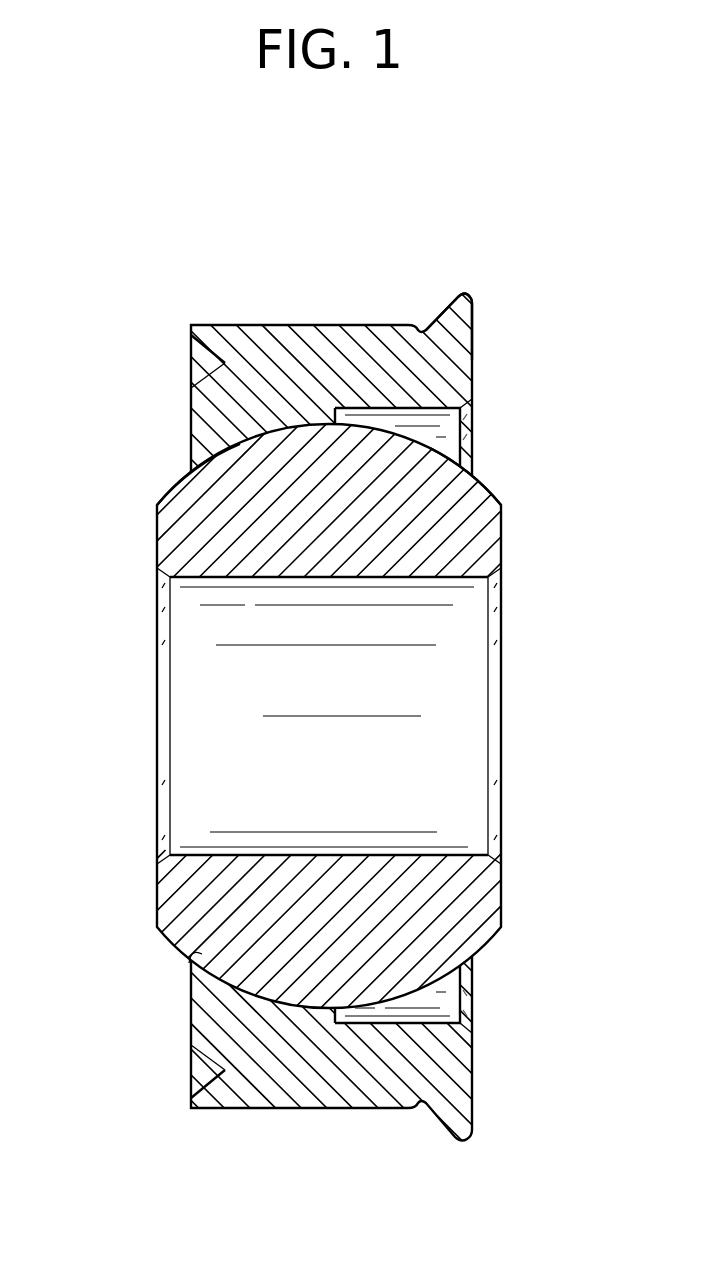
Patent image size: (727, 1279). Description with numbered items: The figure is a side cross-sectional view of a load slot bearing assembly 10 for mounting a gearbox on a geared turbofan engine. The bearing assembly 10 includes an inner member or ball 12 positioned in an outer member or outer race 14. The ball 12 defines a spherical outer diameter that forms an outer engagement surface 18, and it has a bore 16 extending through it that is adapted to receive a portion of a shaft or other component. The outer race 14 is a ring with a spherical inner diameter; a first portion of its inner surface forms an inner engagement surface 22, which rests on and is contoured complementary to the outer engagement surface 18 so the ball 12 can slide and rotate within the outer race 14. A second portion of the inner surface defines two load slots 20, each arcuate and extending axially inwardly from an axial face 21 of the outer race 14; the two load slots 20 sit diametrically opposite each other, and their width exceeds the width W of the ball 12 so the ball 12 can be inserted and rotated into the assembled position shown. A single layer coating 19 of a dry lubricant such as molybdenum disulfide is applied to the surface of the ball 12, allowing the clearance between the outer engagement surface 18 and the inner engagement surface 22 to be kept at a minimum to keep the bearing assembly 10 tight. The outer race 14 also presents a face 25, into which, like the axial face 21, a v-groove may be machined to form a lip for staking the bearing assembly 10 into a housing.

The bearing assembly 10 is at (193, 250).
The ball 12 is at (155, 901).
The outer race 14 is at (233, 321).
The bore 16 is at (462, 657).
The outer engagement surface 18 is at (170, 480).
The single layer coating 19 is at (490, 487).
The load slot 20 is at (443, 437).
The axial face 21 is at (472, 355).
The inner engagement surface 22 is at (193, 952).
The face 25 is at (191, 418).
The width of the ball W is at (115, 539).